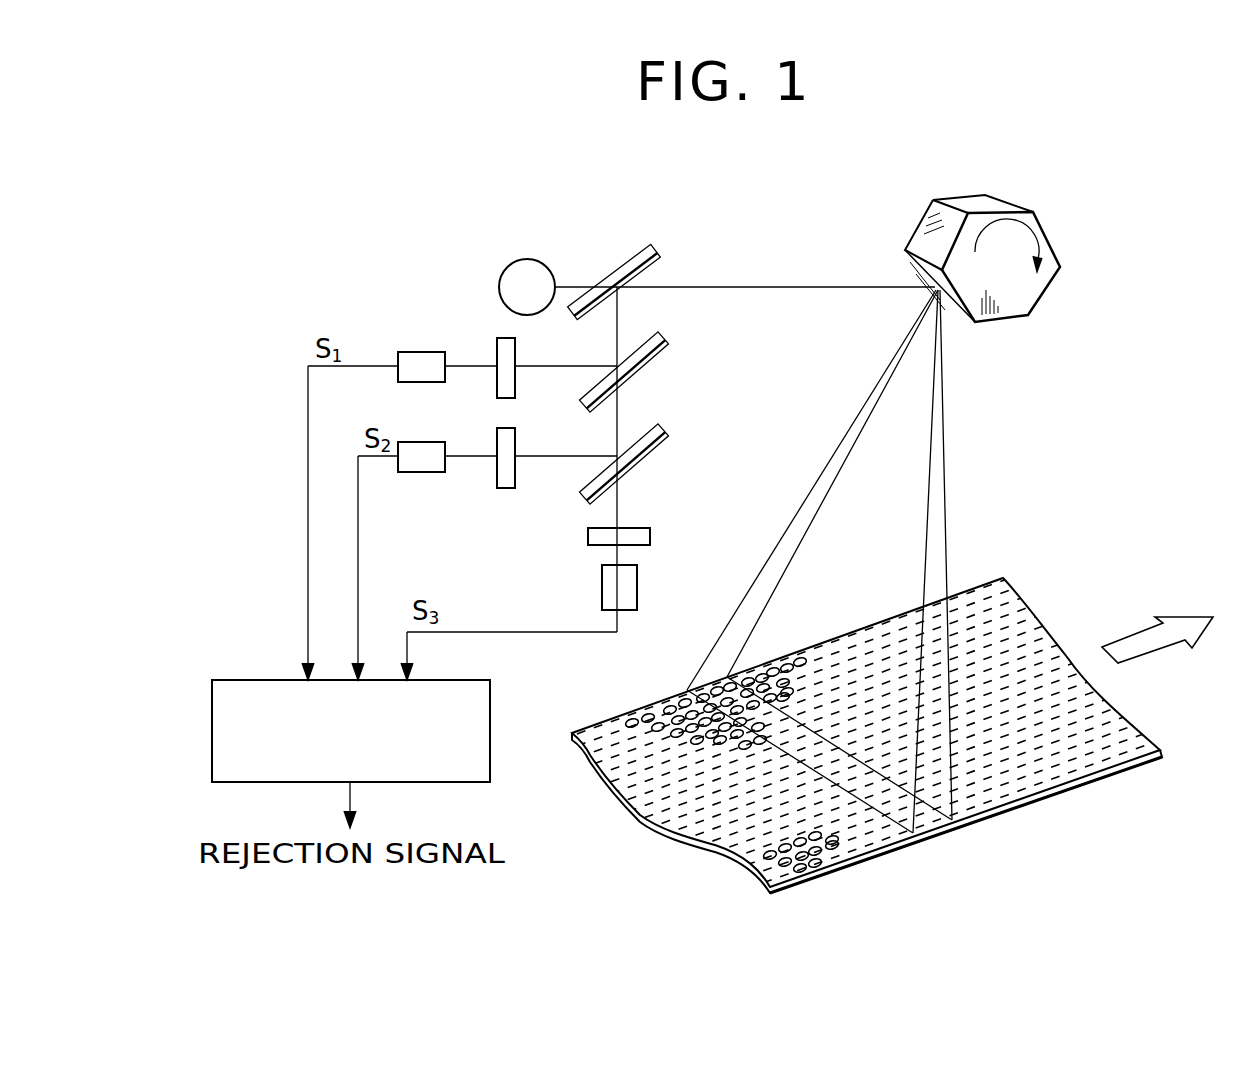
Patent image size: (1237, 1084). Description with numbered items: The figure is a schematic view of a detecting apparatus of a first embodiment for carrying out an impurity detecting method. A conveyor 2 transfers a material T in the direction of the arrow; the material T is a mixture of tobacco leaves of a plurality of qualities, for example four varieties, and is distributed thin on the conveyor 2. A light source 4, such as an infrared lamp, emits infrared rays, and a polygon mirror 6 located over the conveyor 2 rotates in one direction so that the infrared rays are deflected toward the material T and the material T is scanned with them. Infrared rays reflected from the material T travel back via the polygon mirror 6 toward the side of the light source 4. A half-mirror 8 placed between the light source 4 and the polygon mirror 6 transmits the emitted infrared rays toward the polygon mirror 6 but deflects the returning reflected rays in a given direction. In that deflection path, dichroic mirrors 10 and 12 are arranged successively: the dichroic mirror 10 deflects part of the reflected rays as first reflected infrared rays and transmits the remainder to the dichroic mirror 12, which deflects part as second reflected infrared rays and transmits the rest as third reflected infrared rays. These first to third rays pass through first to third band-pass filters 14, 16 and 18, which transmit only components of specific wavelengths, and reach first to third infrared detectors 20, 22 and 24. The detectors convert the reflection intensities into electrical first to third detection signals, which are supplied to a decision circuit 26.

The conveyor 2 is at (1068, 796).
The light source 4 is at (521, 268).
The polygon mirror 6 is at (1057, 246).
The half-mirror 8 is at (636, 248).
The dichroic mirror 10 is at (660, 364).
The dichroic mirror 12 is at (662, 455).
The first band-pass filter 14 is at (497, 345).
The second band-pass filter 16 is at (497, 436).
The third band-pass filter 18 is at (588, 536).
The first infrared detector 20 is at (415, 352).
The second infrared detector 22 is at (413, 473).
The third infrared detector 24 is at (602, 580).
The decision circuit 26 is at (260, 680).
The material T is at (658, 722).